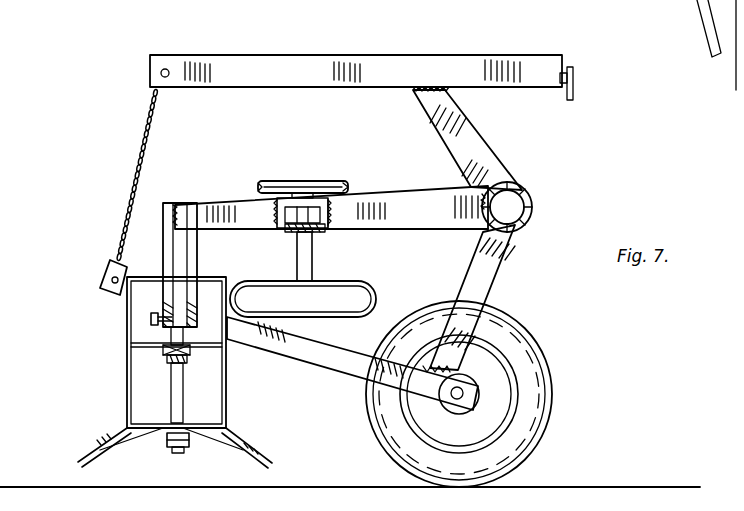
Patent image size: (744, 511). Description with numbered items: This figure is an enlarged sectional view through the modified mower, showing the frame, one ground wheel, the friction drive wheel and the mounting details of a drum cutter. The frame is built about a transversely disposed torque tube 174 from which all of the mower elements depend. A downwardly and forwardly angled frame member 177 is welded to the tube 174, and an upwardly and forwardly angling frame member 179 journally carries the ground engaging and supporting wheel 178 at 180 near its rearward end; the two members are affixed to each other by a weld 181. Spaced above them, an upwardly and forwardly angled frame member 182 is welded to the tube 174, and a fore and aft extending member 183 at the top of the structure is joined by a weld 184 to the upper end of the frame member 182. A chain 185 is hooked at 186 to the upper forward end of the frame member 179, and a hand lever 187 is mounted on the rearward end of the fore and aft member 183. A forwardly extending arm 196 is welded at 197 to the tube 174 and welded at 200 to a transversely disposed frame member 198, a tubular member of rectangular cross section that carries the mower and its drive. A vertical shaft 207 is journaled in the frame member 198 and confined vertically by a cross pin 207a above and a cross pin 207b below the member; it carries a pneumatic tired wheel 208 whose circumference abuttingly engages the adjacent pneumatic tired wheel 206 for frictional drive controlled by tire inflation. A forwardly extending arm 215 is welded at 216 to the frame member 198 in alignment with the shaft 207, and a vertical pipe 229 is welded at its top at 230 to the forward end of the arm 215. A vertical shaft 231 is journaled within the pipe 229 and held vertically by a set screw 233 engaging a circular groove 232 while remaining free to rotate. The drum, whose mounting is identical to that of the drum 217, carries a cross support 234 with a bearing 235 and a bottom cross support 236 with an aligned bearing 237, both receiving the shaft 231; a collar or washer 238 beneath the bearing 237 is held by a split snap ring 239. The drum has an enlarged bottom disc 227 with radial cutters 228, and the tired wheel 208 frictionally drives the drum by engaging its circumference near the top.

The tube member 174 is at (531, 199).
The frame member 177 is at (492, 275).
The ground engaging and supporting wheel 178 is at (543, 378).
The frame member 179 is at (341, 372).
The wheel journal 180 is at (463, 397).
The weld 181 is at (463, 353).
The frame member 182 is at (473, 137).
The fore and aft extending member 183 is at (274, 55).
The weld 184 is at (431, 87).
The chain 185 is at (147, 122).
The hook point 186 is at (108, 279).
The hand lever 187 is at (575, 96).
The arm 196 is at (425, 229).
The weld 197 is at (498, 176).
The frame member 198 is at (302, 207).
The weld 200 is at (331, 209).
The pneumatic tired wheel 206 is at (331, 180).
The vertical shaft 207 is at (297, 258).
The cross pin 207a is at (293, 207).
The cross pin 207b is at (313, 235).
The pneumatic tired wheel 208 is at (378, 295).
The forwardly extending arm 215 is at (203, 208).
The weld 216 is at (277, 212).
The drum or sleeve member 217 is at (262, 186).
The bottom disc 227 is at (115, 440).
The radial cutters 228 is at (83, 456).
The pipe or tube member 229 is at (187, 247).
The weld 230 is at (173, 213).
The vertical shaft 231 is at (182, 407).
The circular groove 232 is at (168, 333).
The set screw 233 is at (150, 318).
The cross support 234 is at (147, 348).
The bearing 235 is at (190, 357).
The bottom cross support 236 is at (208, 432).
The bearing 237 is at (163, 431).
The collar or washer 238 is at (170, 447).
The split snap ring 239 is at (186, 453).